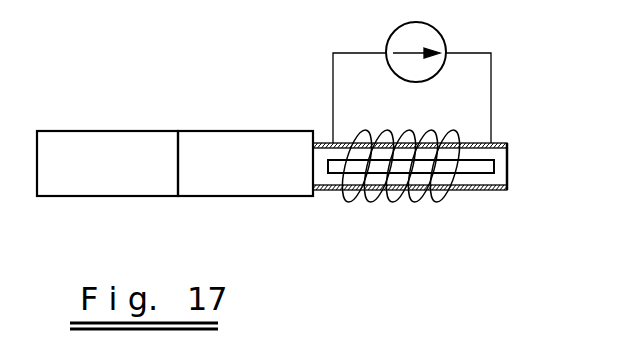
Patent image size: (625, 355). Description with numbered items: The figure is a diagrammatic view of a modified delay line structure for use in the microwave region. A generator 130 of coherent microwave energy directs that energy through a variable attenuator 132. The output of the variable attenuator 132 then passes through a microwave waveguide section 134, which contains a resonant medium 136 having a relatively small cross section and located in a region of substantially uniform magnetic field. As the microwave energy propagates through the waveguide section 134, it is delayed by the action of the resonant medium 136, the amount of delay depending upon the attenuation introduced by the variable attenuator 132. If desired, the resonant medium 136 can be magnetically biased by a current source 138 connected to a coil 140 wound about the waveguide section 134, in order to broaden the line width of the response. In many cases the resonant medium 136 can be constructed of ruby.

The generator 130 is at (68, 138).
The variable attenuator 132 is at (182, 138).
The microwave waveguide section 134 is at (498, 141).
The resonant medium 136 is at (350, 167).
The current source 138 is at (396, 68).
The coil 140 is at (420, 198).